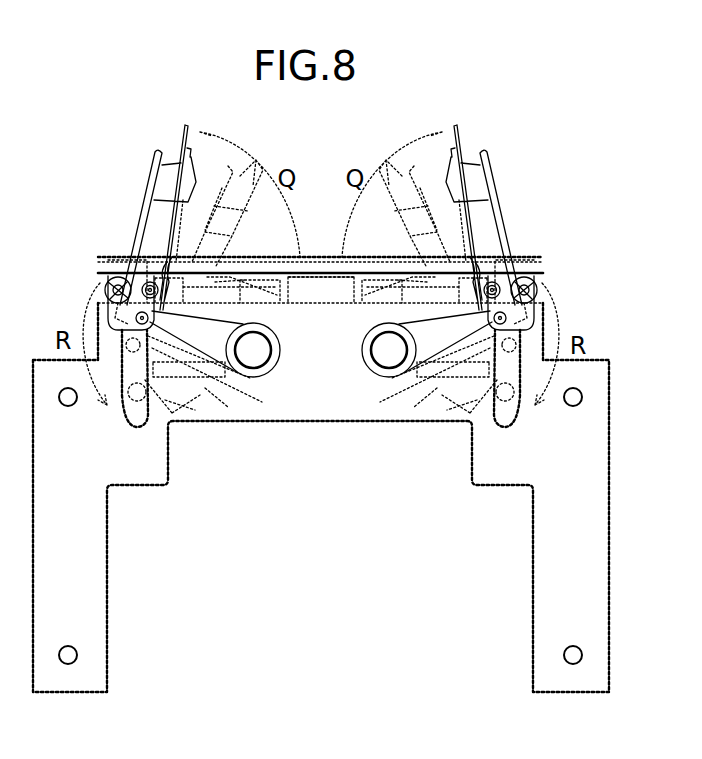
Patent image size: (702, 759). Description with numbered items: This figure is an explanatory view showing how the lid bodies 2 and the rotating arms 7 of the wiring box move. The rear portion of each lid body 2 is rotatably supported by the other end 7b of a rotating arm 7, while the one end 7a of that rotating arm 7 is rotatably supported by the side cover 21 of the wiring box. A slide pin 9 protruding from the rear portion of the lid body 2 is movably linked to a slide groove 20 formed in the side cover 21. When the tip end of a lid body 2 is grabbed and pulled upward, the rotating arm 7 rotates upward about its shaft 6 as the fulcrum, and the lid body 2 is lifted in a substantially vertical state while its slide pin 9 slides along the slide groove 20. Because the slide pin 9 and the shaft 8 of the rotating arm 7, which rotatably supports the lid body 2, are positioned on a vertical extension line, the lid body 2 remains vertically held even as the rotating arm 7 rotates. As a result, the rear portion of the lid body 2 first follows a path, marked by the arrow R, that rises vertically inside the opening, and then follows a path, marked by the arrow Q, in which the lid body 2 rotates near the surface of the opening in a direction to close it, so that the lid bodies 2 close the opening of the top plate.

The lid body 2 is at (140, 210).
The shaft 6 is at (250, 348).
The rotating arm 7 is at (210, 320).
The one end of the rotating arm 7a is at (258, 365).
The other end of the rotating arm 7b is at (167, 262).
The shaft of the rotating arm 8 is at (150, 280).
The slide pin 9 is at (110, 284).
The slide groove 20 is at (133, 413).
The side cover 21 is at (87, 560).